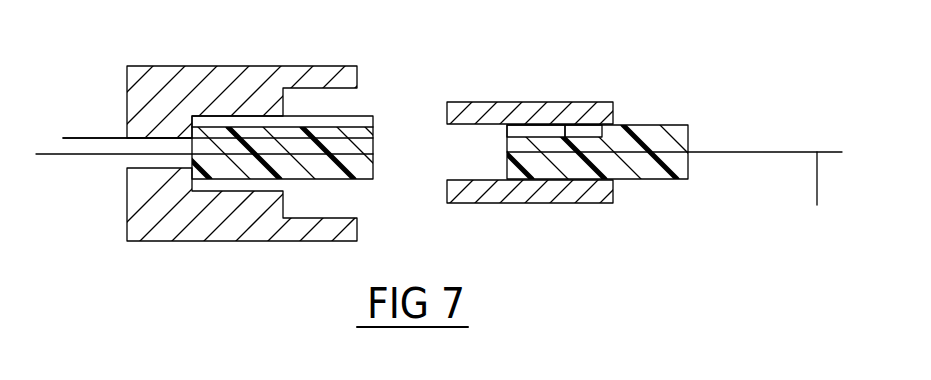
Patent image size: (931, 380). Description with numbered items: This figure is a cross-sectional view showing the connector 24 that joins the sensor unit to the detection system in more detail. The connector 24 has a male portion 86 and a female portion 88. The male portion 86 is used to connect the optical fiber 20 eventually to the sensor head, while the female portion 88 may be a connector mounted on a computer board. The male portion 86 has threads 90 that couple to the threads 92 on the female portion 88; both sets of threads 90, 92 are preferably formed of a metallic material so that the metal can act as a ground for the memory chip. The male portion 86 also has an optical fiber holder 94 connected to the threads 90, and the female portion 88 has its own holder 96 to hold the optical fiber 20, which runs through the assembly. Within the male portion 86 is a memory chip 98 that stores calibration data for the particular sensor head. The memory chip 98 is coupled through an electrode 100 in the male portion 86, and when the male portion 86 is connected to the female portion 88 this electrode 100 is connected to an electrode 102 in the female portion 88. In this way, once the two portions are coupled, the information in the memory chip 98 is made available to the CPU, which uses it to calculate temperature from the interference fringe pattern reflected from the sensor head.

The connector 24 is at (85, 52).
The optical fiber 20 is at (93, 160).
The electrode 102 is at (83, 138).
The female portion 88 is at (243, 179).
The threads 92 is at (112, 255).
The holder 96 is at (373, 166).
The male portion 86 is at (558, 162).
The threads 90 is at (456, 127).
The optical fiber holder 94 is at (596, 120).
The memory chip 98 is at (583, 130).
The electrode 100 is at (522, 133).